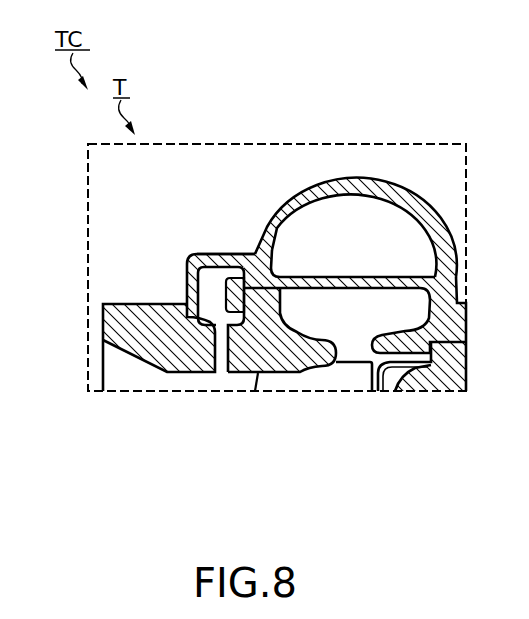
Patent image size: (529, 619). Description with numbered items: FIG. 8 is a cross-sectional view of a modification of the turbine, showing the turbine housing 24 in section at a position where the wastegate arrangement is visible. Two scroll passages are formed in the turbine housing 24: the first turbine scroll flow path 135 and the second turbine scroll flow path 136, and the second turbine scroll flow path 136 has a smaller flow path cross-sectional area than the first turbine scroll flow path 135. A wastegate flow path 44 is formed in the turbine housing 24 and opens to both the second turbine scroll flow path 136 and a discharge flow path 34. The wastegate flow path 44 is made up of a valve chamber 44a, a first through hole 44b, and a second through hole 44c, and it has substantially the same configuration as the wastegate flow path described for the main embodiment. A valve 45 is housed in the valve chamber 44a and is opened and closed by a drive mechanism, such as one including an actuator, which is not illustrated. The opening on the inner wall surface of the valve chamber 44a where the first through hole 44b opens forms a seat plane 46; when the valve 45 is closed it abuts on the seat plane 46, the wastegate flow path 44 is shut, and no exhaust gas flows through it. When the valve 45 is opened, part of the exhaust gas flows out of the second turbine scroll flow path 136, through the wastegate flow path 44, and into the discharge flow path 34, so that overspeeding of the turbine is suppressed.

The turbine housing 24 is at (379, 234).
The discharge flow path 34 is at (186, 379).
The wastegate flow path 44 is at (177, 283).
The valve chamber 44a is at (207, 257).
The first through hole 44b is at (268, 300).
The second through hole 44c is at (234, 345).
The valve 45 is at (222, 284).
The seat plane 46 is at (226, 275).
The first turbine scroll flow path 135 is at (387, 207).
The second turbine scroll flow path 136 is at (314, 298).